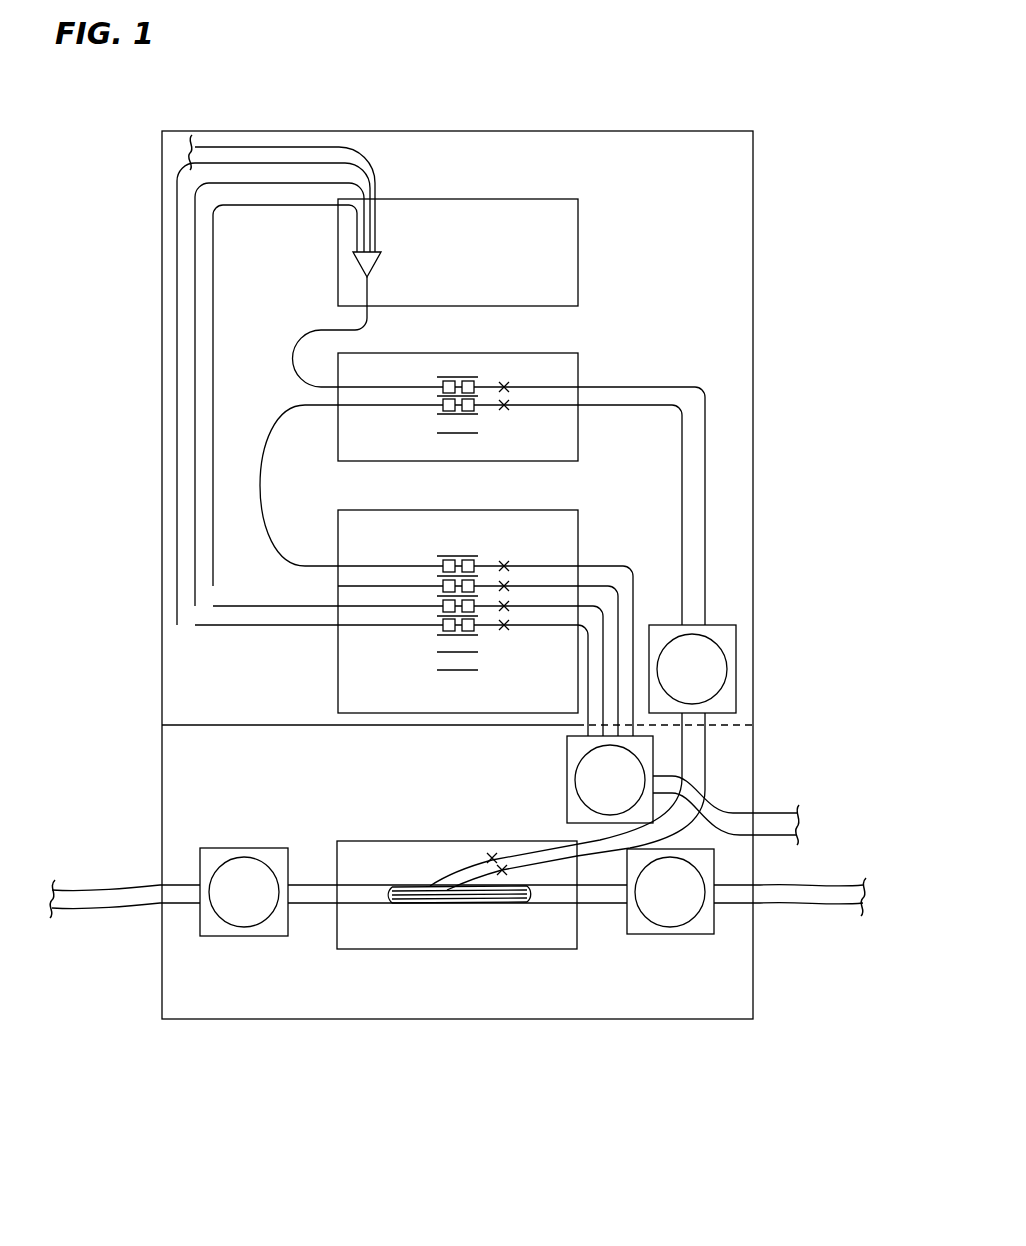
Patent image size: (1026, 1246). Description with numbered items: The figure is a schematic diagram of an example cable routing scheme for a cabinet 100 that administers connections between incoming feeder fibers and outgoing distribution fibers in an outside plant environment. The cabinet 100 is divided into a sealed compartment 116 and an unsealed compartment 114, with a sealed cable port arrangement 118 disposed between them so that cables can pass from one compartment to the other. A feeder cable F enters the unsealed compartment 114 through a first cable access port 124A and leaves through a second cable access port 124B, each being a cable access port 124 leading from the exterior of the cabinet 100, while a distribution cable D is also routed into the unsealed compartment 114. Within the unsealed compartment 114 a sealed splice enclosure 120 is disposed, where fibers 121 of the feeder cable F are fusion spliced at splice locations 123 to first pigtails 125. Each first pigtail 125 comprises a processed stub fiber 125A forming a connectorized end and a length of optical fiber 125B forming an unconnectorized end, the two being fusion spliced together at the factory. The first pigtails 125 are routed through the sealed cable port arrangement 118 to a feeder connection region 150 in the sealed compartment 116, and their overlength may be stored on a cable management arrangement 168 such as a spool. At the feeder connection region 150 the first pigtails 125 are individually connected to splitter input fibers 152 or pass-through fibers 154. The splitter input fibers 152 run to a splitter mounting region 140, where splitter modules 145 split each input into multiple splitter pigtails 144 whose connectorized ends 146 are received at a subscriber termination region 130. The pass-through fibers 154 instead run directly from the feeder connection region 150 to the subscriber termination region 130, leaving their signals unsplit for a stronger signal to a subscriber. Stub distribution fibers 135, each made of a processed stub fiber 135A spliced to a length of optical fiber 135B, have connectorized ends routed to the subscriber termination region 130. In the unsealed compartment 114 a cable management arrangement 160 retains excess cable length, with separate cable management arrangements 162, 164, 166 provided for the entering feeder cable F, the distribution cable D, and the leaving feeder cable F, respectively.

The cabinet 100 is at (758, 114).
The unsealed compartment 114 is at (162, 778).
The sealed compartment 116 is at (162, 567).
The sealed cable port arrangement 118 is at (740, 727).
The splice enclosure 120 is at (412, 950).
The fibers of the feeder cable 121 is at (430, 880).
The splice locations 123 is at (492, 858).
The cable access port 124 is at (470, 976).
The first cable access port 124A is at (160, 906).
The second cable access port 124B is at (762, 906).
The first pigtail 125 is at (705, 478).
The processed stub fiber 125A is at (494, 386).
The length of optical fiber 125B is at (640, 387).
The subscriber termination region 130 is at (503, 508).
The stub distribution fiber 135 is at (612, 567).
The processed stub fiber 135A is at (504, 562).
The length of optical fiber 135B is at (535, 572).
The splitter mounting region 140 is at (460, 199).
The splitter pigtails 144 is at (370, 168).
The splitter module 145 is at (380, 266).
The connectorized ends 146 is at (447, 625).
The feeder connection region 150 is at (482, 345).
The splitter input fibers 152 is at (300, 340).
The pass-through fibers 154 is at (275, 478).
The cable management arrangement 160 is at (467, 870).
The cable management arrangement 162 is at (262, 847).
The cable management arrangement 164 is at (572, 773).
The cable management arrangement 166 is at (640, 934).
The cable management arrangement 168 is at (736, 632).
The distribution cable D is at (775, 836).
The feeder cable F is at (80, 912).